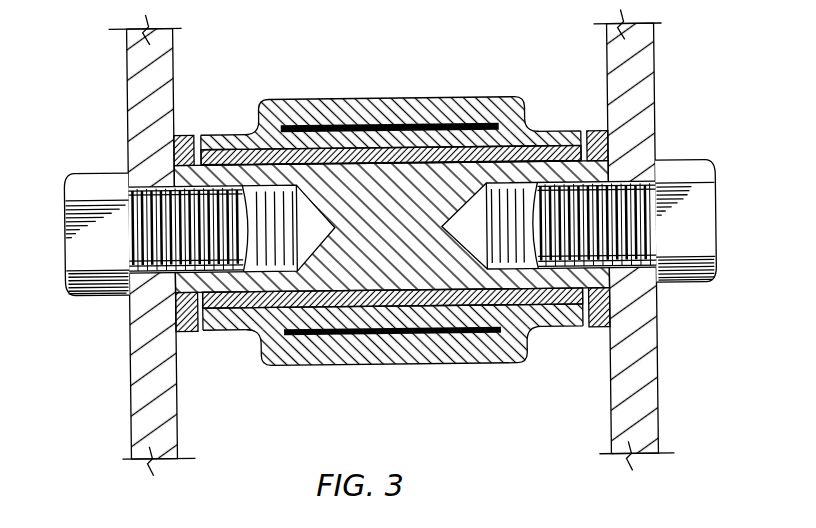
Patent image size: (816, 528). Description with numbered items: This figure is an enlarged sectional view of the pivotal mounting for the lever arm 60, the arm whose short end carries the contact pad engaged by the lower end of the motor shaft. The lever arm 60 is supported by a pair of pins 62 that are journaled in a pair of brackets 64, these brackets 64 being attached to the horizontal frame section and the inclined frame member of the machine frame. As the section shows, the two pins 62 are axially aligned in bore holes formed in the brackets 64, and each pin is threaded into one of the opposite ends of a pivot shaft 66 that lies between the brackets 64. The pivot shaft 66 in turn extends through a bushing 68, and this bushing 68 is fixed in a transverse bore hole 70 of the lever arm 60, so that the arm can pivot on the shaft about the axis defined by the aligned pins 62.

The pivotal lever arm 60 is at (404, 97).
The pins 62 is at (88, 169).
The brackets 64 is at (129, 307).
The pivot shaft 66 is at (369, 240).
The bushing 68 is at (211, 141).
The transverse bore hole 70 is at (536, 154).